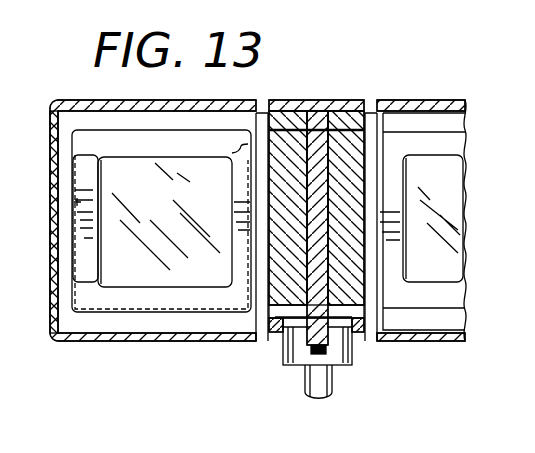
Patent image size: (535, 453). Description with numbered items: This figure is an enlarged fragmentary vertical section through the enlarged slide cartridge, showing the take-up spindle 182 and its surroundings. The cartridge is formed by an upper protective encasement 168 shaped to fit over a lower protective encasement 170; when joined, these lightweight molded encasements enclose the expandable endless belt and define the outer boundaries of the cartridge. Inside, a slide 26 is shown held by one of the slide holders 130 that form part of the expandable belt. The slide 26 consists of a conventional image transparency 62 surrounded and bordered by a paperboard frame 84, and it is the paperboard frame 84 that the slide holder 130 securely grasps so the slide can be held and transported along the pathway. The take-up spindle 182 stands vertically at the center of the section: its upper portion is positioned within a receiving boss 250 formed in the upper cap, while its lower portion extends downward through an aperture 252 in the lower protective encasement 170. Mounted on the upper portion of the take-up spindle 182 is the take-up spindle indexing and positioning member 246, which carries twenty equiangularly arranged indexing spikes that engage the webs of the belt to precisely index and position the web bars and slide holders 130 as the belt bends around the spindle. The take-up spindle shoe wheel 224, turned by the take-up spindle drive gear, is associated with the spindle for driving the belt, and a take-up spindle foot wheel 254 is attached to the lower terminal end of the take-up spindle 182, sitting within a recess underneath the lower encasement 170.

The slide 26 is at (160, 130).
The image transparency 62 is at (170, 208).
The paperboard frame 84 is at (117, 147).
The slide holder 130 is at (80, 222).
The upper protective encasement 168 is at (282, 103).
The lower protective encasement 170 is at (150, 342).
The take-up spindle 182 is at (320, 120).
The take-up spindle shoe wheel 224 is at (352, 347).
The take-up spindle indexing and positioning member 246 is at (352, 158).
The receiving boss 250 is at (347, 122).
The aperture 252 is at (332, 342).
The take-up spindle foot wheel 254 is at (284, 325).